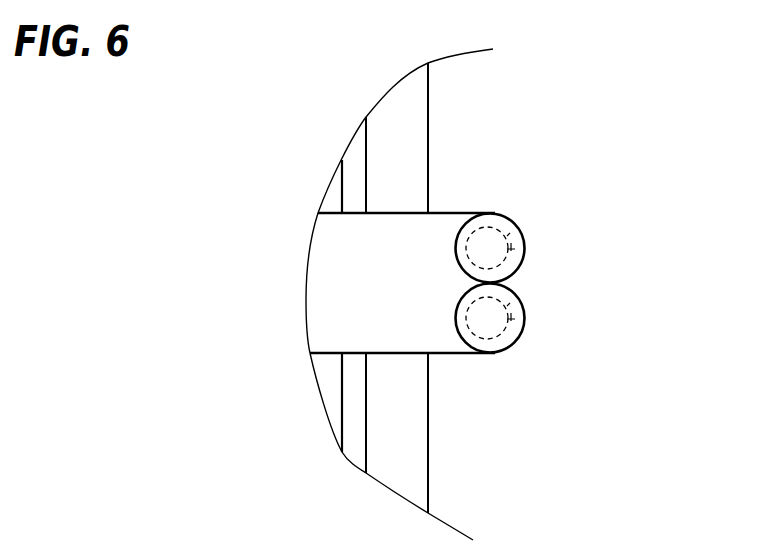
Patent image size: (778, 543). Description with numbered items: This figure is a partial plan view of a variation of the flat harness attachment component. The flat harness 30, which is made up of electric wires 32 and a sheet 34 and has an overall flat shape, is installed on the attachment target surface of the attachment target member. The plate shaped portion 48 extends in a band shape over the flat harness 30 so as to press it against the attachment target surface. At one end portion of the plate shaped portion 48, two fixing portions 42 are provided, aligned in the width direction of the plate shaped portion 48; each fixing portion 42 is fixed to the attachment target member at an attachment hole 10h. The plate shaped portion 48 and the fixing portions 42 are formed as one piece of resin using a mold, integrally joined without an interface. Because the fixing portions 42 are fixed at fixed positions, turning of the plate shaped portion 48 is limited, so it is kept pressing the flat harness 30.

The flat harness 30 is at (431, 120).
The plate shaped portion 48 is at (393, 210).
The electric wires 32 is at (390, 450).
The sheet 34 is at (430, 418).
The fixing portion 42 is at (503, 213).
The attachment hole 10h is at (525, 226).